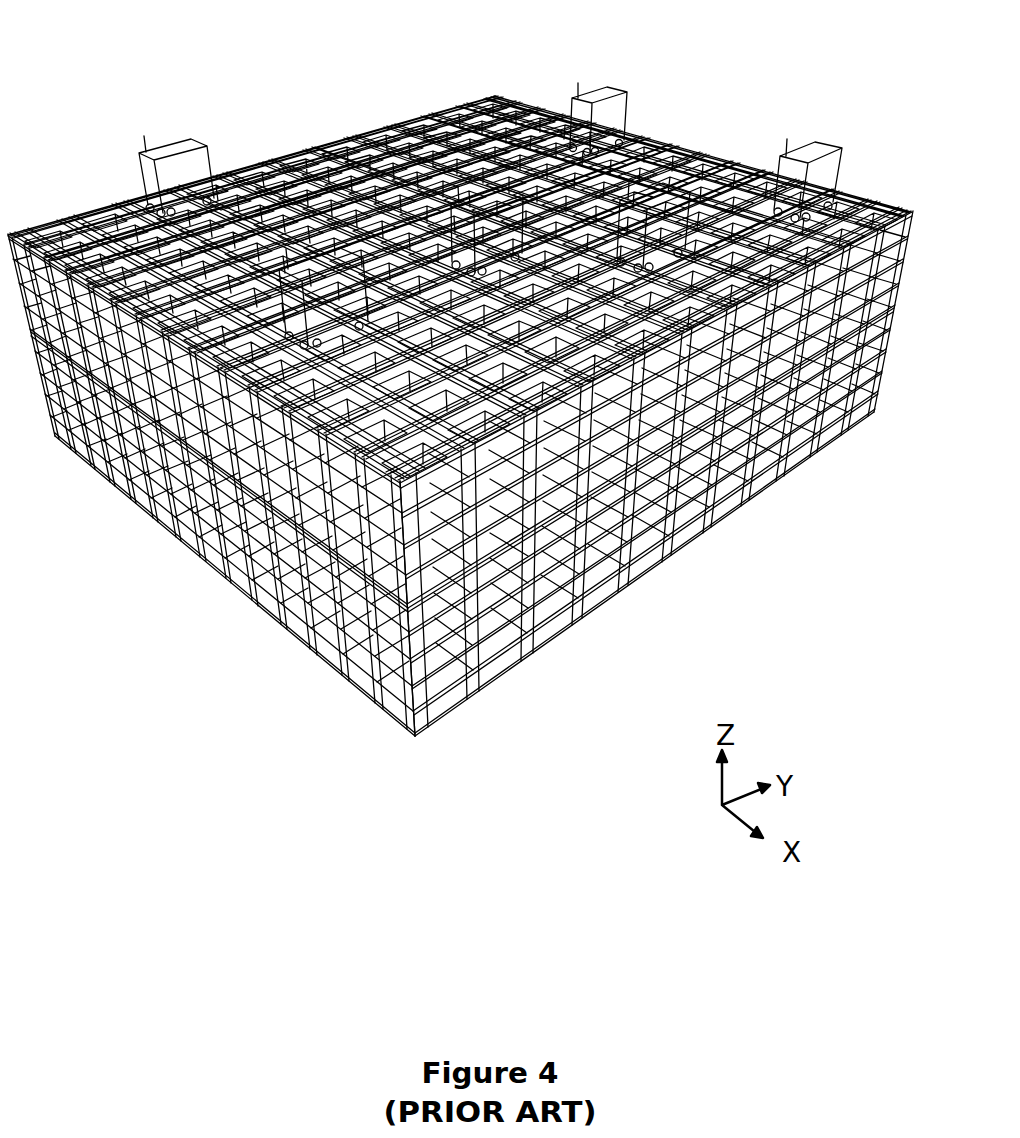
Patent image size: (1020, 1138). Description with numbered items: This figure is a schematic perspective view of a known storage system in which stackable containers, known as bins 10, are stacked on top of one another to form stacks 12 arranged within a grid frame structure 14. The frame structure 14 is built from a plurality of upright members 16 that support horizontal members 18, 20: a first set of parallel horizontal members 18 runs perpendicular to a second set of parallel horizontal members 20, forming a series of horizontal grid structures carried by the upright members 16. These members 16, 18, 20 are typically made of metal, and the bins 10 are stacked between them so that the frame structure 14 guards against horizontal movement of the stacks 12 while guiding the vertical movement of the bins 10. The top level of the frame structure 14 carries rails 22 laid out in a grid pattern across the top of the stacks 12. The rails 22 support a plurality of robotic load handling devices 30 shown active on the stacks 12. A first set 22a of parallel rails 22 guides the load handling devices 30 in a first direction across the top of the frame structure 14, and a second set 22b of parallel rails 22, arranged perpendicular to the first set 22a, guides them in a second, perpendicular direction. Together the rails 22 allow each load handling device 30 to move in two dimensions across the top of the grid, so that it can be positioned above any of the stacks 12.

The bin 10 is at (466, 413).
The stack 12 is at (758, 477).
The grid frame structure 14 is at (466, 370).
The upright member 16 is at (320, 615).
The first set of parallel horizontal members 18 is at (557, 525).
The second set of parallel horizontal members 20 is at (240, 487).
The rails 22 is at (459, 265).
The first set of parallel rails 22a is at (240, 345).
The second set of parallel rails 22b is at (325, 205).
The robotic load handling device 30 is at (620, 120).